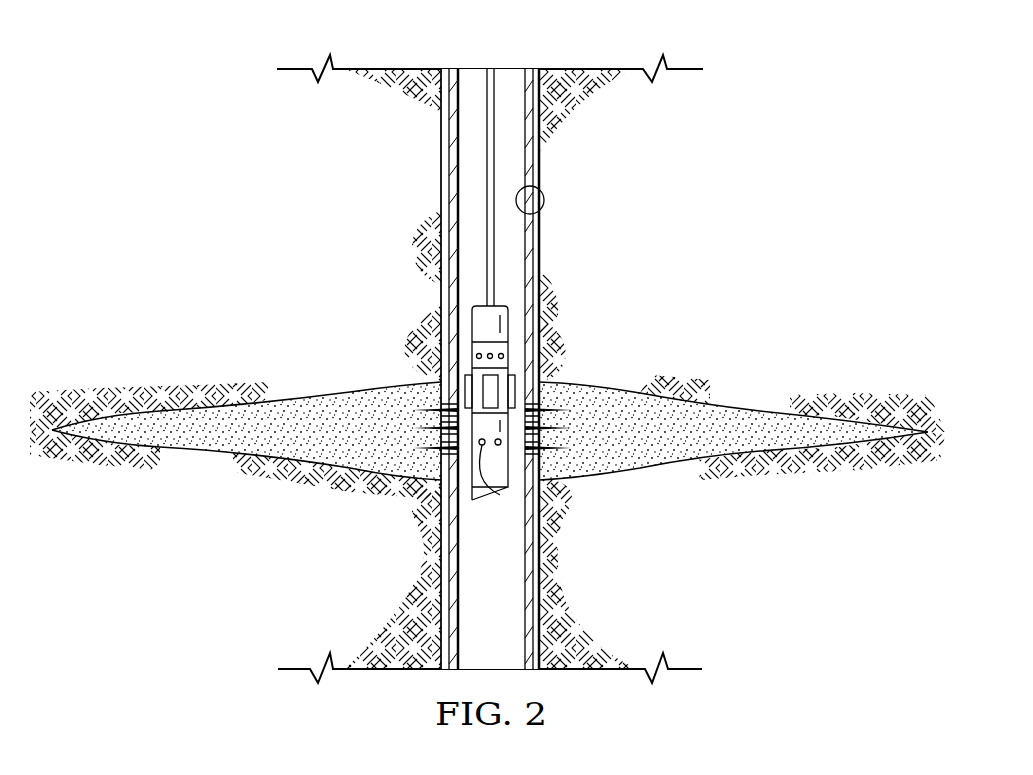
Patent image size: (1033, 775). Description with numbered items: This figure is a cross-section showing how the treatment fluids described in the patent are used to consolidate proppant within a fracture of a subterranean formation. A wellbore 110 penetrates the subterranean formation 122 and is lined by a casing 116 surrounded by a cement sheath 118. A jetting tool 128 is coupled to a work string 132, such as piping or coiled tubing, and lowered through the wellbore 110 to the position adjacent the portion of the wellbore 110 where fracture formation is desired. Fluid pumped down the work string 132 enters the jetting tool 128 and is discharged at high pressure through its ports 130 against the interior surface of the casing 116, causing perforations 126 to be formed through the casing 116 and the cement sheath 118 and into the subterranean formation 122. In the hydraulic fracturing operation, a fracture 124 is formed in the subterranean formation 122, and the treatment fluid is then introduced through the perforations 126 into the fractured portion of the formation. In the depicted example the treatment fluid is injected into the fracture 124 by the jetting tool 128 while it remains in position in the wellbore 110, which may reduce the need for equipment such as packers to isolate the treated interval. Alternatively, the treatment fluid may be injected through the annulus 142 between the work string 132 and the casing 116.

The wellbore 110 is at (541, 211).
The casing 116 is at (528, 252).
The cement sheath 118 is at (445, 145).
The subterranean formation 122 is at (762, 257).
The fracture 124 is at (750, 417).
The perforations 126 is at (426, 406).
The jetting tool 128 is at (472, 320).
The ports 130 is at (498, 445).
The work string 132 is at (485, 225).
The annulus 142 is at (475, 78).